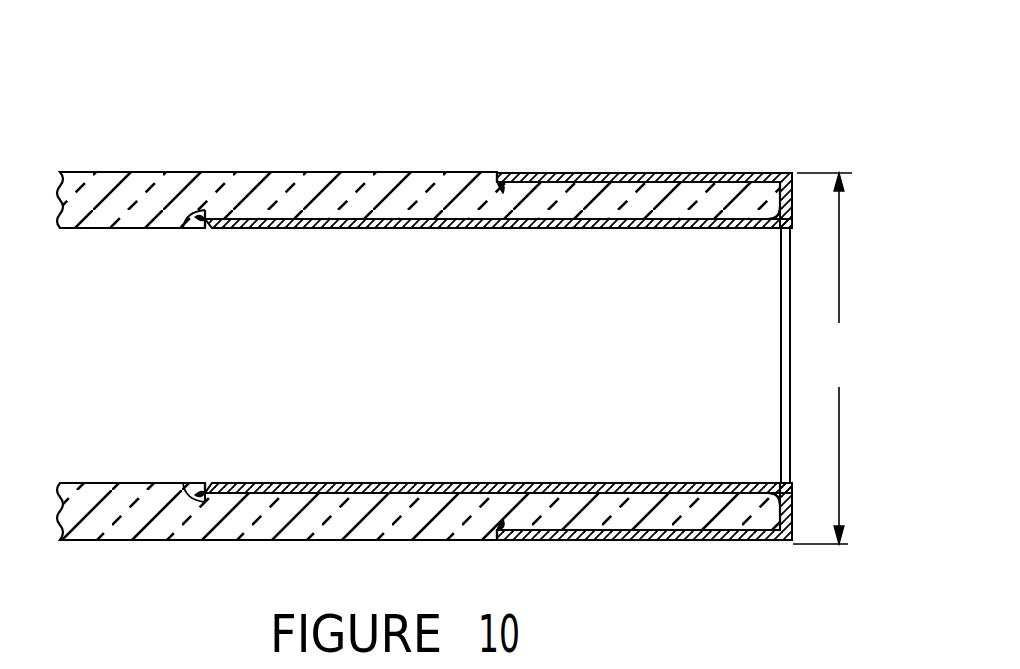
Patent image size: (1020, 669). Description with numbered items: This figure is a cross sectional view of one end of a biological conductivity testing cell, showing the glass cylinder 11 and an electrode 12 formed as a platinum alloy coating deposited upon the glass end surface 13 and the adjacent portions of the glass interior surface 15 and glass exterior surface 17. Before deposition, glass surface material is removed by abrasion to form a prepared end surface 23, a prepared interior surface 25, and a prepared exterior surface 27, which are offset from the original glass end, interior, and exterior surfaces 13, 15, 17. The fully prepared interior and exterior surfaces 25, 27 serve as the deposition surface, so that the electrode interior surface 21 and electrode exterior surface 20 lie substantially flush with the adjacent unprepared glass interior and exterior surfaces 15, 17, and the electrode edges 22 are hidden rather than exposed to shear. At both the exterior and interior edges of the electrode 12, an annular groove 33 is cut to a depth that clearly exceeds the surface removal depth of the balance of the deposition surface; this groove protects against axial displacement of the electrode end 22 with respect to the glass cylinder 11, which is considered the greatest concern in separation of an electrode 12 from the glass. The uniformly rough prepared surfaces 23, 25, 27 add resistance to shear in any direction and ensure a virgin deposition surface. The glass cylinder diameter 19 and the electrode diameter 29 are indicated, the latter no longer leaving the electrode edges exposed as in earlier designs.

The glass cylinder 11 is at (100, 176).
The electrode 12 is at (367, 229).
The glass end surface 13 is at (780, 347).
The glass interior surface 15 is at (103, 229).
The glass exterior surface 17 is at (147, 172).
The glass cylinder diameter 19 is at (823, 358).
The electrode exterior surface 20 is at (577, 182).
The electrode interior surface 21 is at (250, 229).
The electrode edge 22 is at (185, 228).
The prepared end surface 23 is at (767, 212).
The prepared interior surface 25 is at (587, 210).
The prepared exterior surface 27 is at (596, 188).
The electrode diameter 29 is at (844, 358).
The annular groove 33 is at (207, 210).